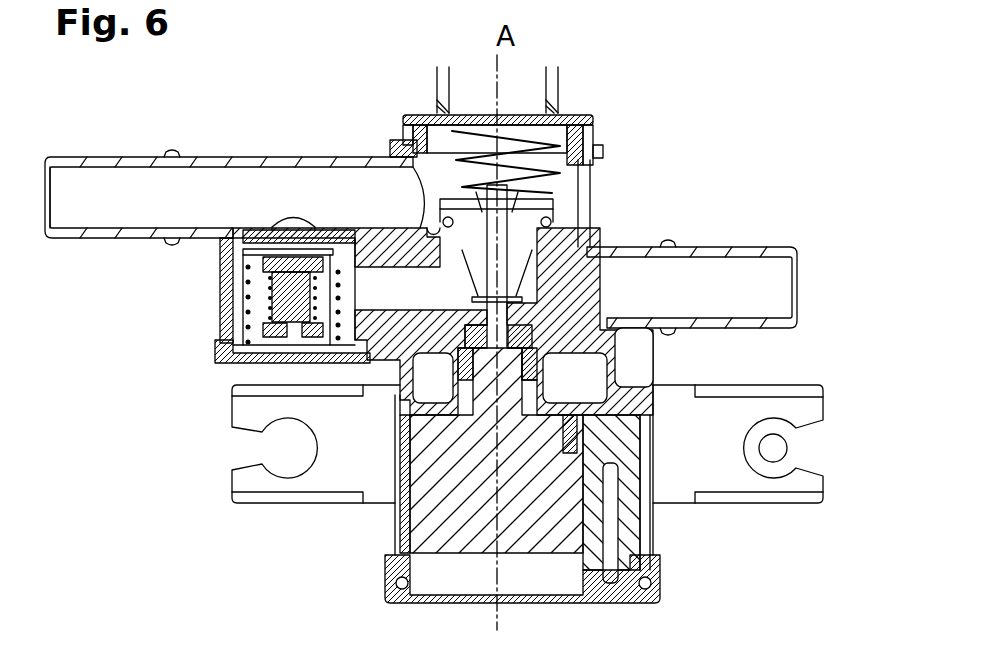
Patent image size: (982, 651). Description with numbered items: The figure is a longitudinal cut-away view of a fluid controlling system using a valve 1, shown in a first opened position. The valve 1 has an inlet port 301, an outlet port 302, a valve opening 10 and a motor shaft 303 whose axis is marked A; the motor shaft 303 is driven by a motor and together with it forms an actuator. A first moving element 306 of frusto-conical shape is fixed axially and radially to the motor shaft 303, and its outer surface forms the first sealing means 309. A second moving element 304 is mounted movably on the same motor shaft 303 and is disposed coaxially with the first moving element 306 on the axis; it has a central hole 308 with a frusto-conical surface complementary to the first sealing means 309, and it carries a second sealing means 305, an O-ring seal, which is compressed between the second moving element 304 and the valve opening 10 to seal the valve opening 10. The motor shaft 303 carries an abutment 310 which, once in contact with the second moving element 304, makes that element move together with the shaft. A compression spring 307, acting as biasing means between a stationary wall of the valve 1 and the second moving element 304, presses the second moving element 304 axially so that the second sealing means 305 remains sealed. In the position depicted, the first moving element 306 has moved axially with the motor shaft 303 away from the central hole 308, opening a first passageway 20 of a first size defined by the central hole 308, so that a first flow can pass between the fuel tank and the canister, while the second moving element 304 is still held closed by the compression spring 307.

The valve 1 is at (728, 110).
The valve opening 10 is at (548, 235).
The first passageway 20 is at (458, 181).
The inlet port 301 is at (103, 200).
The outlet port 302 is at (765, 290).
The motor shaft 303 is at (490, 322).
The second moving element 304 is at (415, 201).
The second sealing means 305 is at (430, 253).
The first moving element 306 is at (413, 170).
The compression spring 307 is at (548, 174).
The central hole 308 is at (535, 194).
The first sealing means 309 is at (522, 206).
The abutment 310 is at (445, 232).